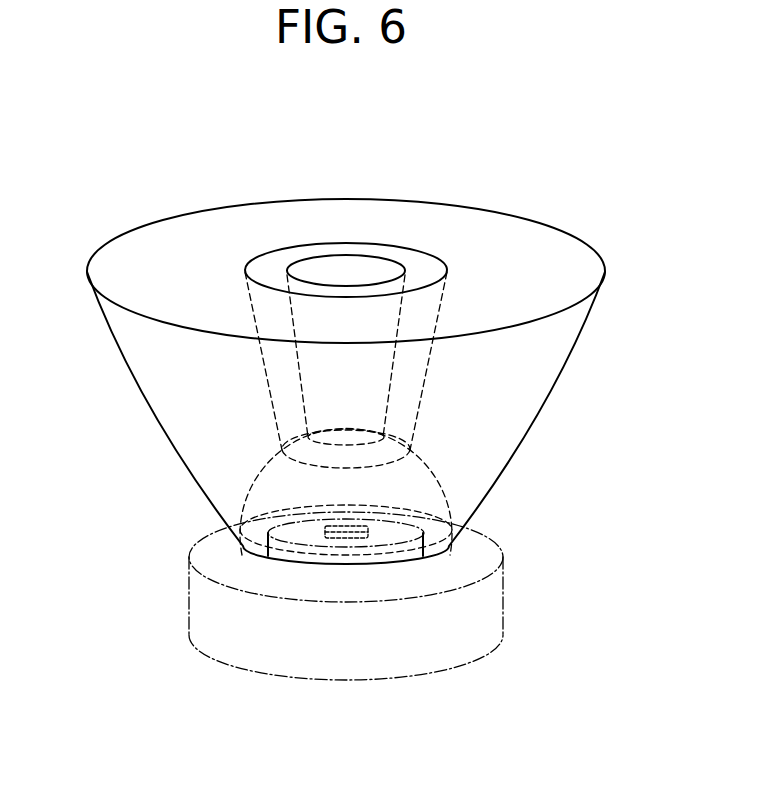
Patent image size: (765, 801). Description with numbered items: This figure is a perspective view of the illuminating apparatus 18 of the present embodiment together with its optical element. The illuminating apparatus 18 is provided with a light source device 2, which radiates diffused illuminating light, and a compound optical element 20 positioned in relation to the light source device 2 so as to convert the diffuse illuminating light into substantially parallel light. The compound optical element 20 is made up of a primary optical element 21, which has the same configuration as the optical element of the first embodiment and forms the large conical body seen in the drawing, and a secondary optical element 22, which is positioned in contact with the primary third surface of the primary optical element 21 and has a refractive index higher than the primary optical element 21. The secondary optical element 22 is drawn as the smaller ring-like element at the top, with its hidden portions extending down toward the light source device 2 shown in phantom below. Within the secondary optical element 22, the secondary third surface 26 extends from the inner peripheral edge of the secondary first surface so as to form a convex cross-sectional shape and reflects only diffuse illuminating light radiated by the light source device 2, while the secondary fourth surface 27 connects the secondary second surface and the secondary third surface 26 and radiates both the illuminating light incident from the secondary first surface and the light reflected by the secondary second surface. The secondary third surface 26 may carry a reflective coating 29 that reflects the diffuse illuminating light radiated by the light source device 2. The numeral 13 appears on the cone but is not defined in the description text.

The light source device 2 is at (572, 582).
The reflector 13 is at (557, 258).
The illuminating apparatus 18 is at (548, 178).
The compound optical element 20 is at (147, 137).
The primary optical element 21 is at (178, 258).
The secondary optical element 22 is at (267, 268).
The secondary surface-3 26 is at (340, 268).
The secondary surface-4 27 is at (427, 268).
The reflective coating 29 is at (384, 270).